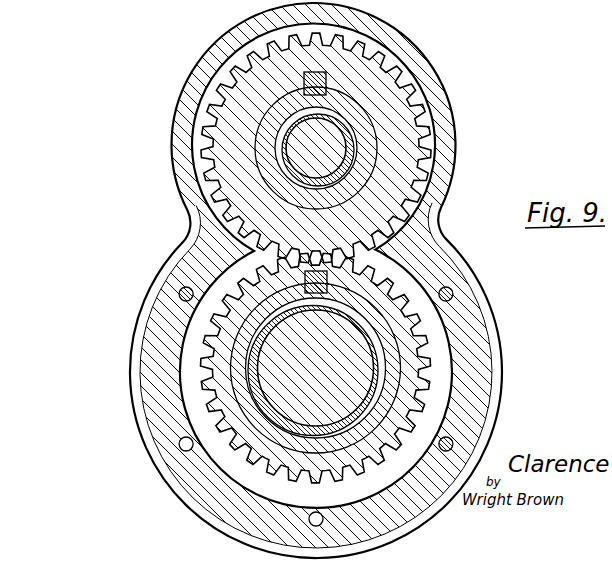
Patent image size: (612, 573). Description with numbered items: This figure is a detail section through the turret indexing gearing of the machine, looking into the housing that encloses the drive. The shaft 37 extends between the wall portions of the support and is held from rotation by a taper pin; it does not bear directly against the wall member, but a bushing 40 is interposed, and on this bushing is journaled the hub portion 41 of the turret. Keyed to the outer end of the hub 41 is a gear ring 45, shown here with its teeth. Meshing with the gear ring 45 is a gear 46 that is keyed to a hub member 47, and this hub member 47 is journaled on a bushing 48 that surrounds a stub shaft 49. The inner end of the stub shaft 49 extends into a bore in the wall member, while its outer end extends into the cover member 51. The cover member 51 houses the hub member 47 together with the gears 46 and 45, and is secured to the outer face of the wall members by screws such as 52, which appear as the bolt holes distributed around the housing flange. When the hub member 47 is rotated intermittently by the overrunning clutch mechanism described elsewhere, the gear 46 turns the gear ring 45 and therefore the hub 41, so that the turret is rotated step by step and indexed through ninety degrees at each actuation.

The shaft 37 is at (270, 374).
The bushing 40 is at (235, 345).
The hub portion 41 is at (392, 378).
The gear ring 45 is at (430, 340).
The gear 46 is at (400, 118).
The hub member 47 is at (348, 110).
The bushing 48 is at (346, 143).
The stub shaft 49 is at (328, 165).
The cover member 51 is at (477, 290).
The screws 52 is at (447, 291).